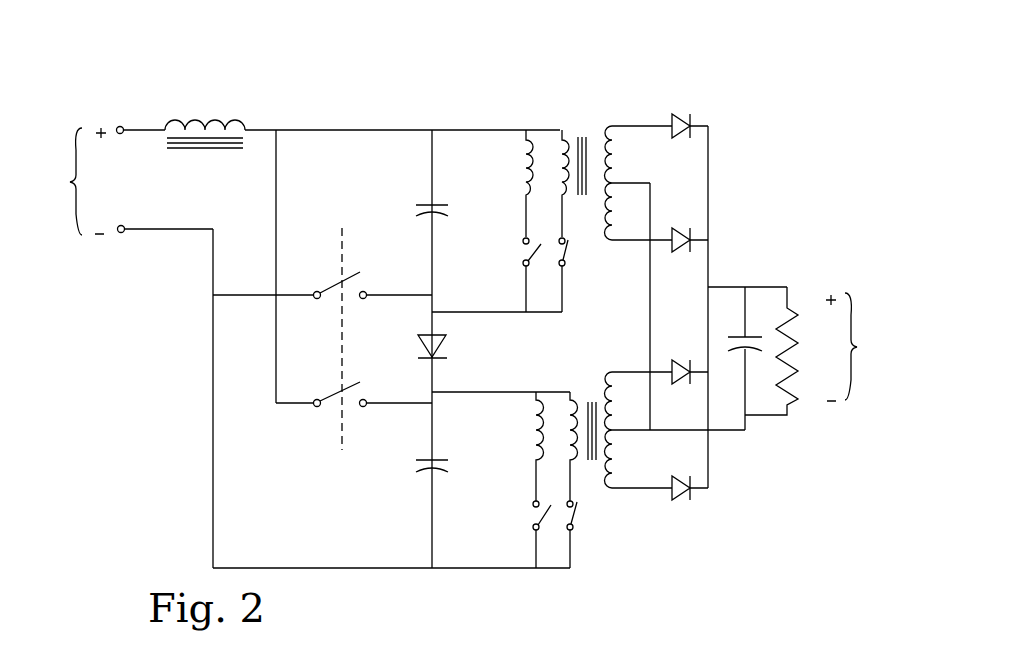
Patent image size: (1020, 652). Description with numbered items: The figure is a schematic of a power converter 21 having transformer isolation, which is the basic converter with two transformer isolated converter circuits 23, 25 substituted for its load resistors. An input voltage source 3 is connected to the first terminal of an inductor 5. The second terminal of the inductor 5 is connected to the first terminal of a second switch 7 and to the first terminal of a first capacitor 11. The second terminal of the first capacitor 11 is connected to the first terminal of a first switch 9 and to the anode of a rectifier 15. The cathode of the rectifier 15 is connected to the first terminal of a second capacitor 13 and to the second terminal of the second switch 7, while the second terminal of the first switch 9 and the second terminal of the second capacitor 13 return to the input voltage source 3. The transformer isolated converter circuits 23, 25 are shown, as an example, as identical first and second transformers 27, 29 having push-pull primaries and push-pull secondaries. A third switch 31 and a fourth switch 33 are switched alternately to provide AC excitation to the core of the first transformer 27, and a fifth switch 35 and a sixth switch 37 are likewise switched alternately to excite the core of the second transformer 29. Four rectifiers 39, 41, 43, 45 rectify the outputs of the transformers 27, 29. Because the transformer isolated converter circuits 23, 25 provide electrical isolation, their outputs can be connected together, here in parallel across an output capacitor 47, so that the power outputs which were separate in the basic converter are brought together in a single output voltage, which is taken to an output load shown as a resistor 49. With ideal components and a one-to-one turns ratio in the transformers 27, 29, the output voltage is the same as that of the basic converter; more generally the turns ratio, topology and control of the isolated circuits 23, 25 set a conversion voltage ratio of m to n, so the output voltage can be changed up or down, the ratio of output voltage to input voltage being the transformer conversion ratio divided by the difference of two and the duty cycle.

The power converter 21 is at (150, 68).
The input voltage source 3 is at (108, 237).
The inductor 5 is at (244, 106).
The switch 9 is at (316, 282).
The switch 7 is at (316, 418).
The capacitor 11 is at (408, 178).
The second capacitor 13 is at (405, 461).
The rectifier 15 is at (412, 357).
The transformer isolated converter circuit 23 is at (573, 62).
The transformer 27 is at (596, 126).
The switch 31 is at (518, 268).
The switch 33 is at (578, 255).
The transformer isolated converter circuit 25 is at (548, 583).
The transformer 29 is at (580, 385).
The switch 35 is at (528, 523).
The switch 37 is at (582, 518).
The rectifier 39 is at (673, 110).
The rectifier 41 is at (710, 240).
The rectifier 43 is at (678, 356).
The rectifier 45 is at (693, 497).
The capacitor 47 is at (757, 322).
The resistor 49 is at (793, 313).